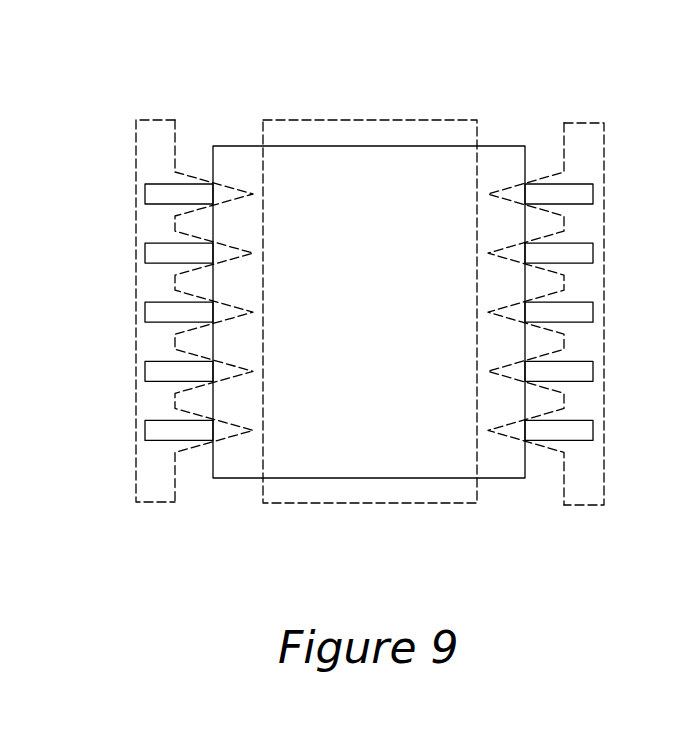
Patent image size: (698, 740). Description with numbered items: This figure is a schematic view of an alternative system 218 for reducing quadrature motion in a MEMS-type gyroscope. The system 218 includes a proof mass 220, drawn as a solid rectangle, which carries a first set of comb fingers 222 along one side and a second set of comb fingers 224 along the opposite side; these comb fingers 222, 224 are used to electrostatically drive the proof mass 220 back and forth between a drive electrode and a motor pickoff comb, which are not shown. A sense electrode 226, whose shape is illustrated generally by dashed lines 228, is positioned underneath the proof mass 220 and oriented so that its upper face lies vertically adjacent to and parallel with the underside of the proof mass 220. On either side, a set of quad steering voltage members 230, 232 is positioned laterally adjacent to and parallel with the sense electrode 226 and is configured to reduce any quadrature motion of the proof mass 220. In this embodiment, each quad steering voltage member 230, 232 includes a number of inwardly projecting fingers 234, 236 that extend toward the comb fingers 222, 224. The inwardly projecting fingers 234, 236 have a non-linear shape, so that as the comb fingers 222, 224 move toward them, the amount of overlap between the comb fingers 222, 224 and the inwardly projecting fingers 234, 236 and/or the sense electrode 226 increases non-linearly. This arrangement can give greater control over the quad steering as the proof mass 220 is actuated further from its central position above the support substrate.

The system 218 is at (375, 260).
The proof mass 220 is at (503, 160).
The first set of comb fingers 222 is at (137, 193).
The second set of comb fingers 224 is at (590, 195).
The sense electrode 226 is at (365, 284).
The dashed lines 228 is at (310, 120).
The quad steering voltage member 230 is at (152, 478).
The quad steering voltage member 232 is at (587, 473).
The inwardly projecting fingers 234 is at (170, 441).
The inwardly projecting fingers 236 is at (585, 388).